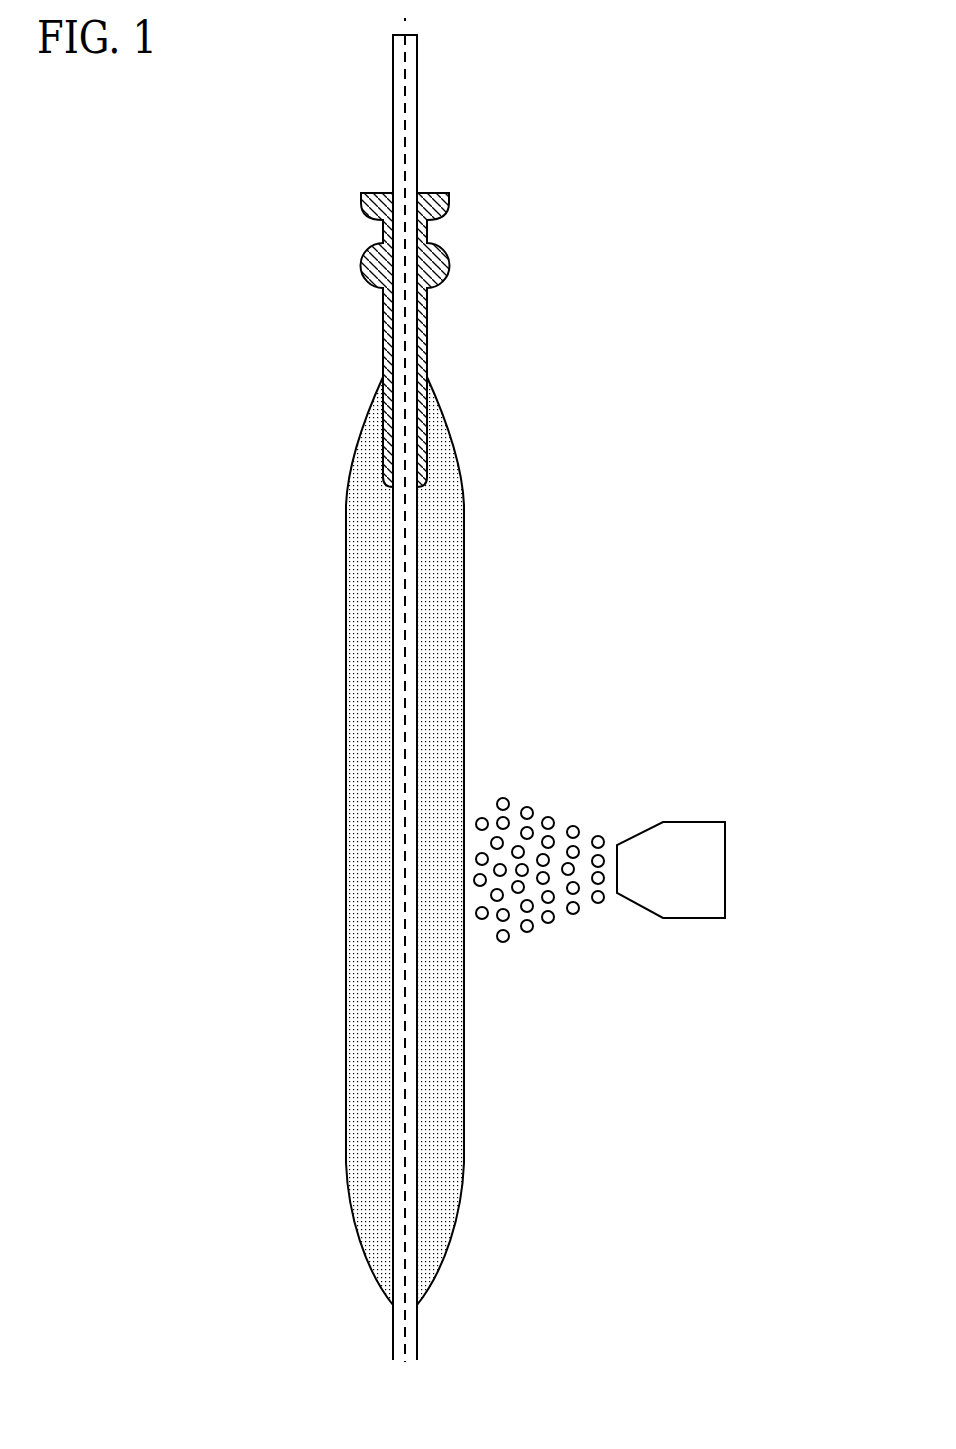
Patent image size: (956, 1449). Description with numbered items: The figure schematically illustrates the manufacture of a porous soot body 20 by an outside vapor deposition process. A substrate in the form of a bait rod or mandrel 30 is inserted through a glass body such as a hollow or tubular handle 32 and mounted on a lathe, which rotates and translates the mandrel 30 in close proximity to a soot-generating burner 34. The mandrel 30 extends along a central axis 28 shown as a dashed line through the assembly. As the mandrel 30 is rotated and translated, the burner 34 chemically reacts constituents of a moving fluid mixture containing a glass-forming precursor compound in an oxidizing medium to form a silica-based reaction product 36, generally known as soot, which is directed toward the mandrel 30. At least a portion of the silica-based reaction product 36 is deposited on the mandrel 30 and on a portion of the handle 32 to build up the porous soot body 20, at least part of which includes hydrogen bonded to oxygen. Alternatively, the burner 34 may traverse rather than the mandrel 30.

The soot body 20 is at (375, 987).
The central axis 28 is at (403, 1209).
The mandrel 30 is at (397, 786).
The handle 32 is at (383, 349).
The soot-generating burner 34 is at (678, 822).
The silica-based reaction product 36 is at (525, 808).